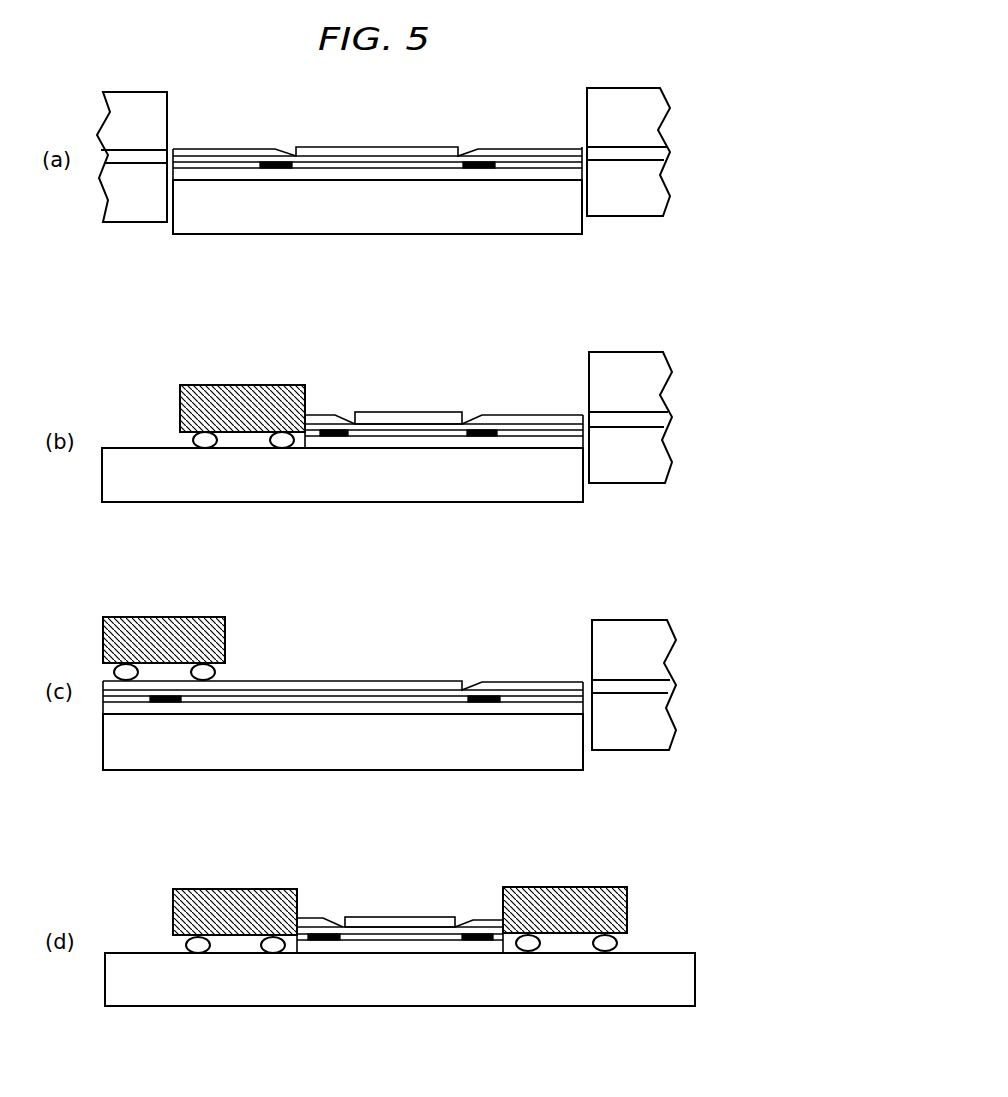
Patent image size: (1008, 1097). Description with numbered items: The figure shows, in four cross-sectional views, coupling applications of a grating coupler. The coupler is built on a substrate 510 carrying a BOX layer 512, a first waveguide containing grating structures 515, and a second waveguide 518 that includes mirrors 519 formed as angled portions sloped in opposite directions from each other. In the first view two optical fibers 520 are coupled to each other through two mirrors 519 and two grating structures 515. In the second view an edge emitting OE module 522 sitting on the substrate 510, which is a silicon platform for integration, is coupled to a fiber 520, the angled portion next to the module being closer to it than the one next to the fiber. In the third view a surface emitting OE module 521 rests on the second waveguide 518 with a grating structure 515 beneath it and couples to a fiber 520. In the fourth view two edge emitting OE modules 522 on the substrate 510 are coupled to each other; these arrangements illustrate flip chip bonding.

The substrate 510 is at (527, 234).
The BOX layer 512 is at (279, 177).
The grating structure 515 is at (472, 173).
The second waveguide 518 is at (417, 412).
The mirror 519 is at (288, 141).
The optical fiber 520 is at (133, 92).
The surface emitting optoelectronic module 521 is at (226, 638).
The edge emitting optoelectronic module 522 is at (180, 410).